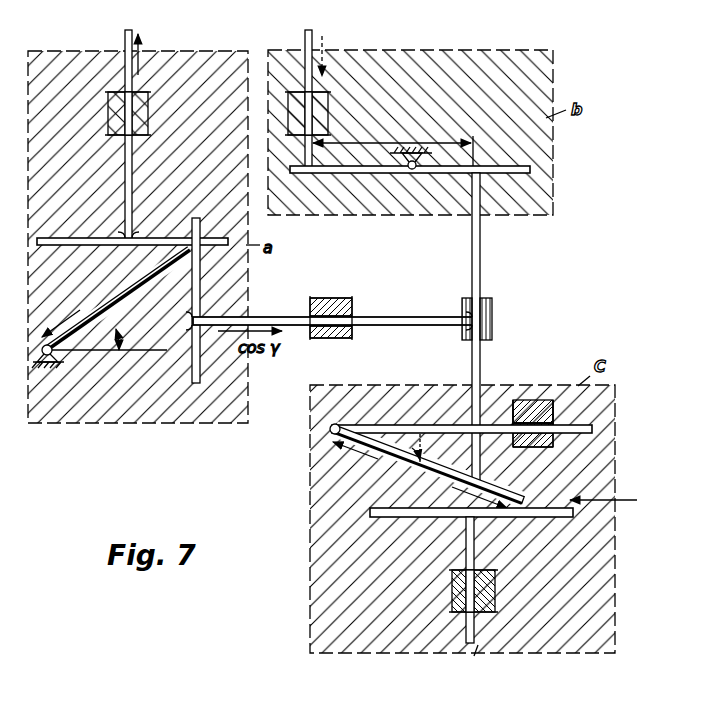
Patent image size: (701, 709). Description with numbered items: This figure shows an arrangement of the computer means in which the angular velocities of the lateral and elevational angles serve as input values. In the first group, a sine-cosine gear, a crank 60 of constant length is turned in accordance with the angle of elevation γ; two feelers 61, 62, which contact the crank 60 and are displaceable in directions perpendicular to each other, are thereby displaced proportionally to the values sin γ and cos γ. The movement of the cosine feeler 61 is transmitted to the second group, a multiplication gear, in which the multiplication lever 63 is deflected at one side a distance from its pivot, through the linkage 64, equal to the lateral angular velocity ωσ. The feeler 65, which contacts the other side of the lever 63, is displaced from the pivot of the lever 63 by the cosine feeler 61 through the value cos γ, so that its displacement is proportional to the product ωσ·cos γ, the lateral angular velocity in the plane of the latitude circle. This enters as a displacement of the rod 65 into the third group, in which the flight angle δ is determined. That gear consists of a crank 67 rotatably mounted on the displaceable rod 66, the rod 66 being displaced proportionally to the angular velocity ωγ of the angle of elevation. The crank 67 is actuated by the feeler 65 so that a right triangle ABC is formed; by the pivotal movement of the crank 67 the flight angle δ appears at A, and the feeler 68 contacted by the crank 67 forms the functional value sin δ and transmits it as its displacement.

The crank 60 is at (93, 324).
The cosine feeler 61 is at (232, 373).
The sine feeler 62 is at (105, 247).
The multiplication lever 63 is at (532, 169).
The linkage 64 is at (305, 42).
The feeler (rod) 65 is at (482, 370).
The displaceable rod 66 is at (433, 426).
The crank 67 is at (443, 470).
The feeler 68 is at (418, 514).